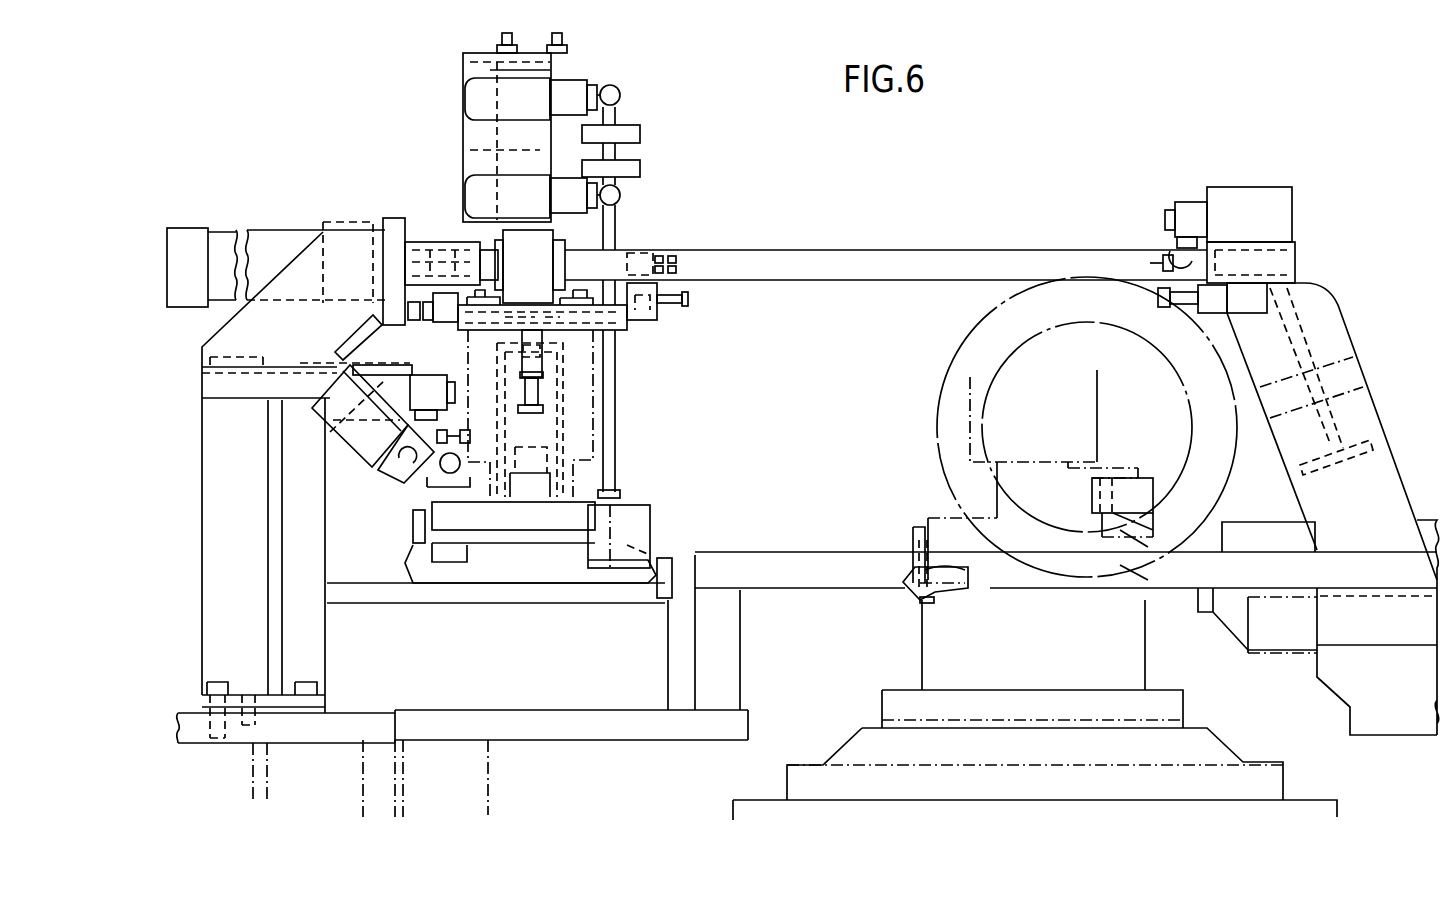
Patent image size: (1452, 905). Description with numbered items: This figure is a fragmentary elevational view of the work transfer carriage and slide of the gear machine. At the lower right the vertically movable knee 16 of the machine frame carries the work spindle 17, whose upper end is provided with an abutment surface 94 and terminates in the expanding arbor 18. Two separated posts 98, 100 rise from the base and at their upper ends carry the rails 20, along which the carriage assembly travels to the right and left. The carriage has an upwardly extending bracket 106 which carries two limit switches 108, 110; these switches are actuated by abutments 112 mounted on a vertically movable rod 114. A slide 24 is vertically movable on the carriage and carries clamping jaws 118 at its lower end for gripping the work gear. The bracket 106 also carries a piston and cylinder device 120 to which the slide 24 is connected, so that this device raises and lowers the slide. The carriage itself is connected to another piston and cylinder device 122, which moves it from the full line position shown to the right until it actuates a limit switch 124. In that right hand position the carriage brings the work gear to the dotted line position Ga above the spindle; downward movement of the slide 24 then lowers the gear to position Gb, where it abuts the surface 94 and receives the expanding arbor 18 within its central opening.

The vertically movable knee 16 is at (1297, 800).
The work spindle 17 is at (842, 750).
The expanding arbor 18 is at (915, 566).
The rails 20 is at (896, 250).
The slide 24 is at (470, 347).
The abutment surface 94 is at (920, 600).
The post 98 is at (1358, 332).
The post 100 is at (202, 490).
The upwardly extending bracket 106 is at (463, 150).
The limit switch 108 is at (538, 110).
The limit switch 110 is at (531, 208).
The abutments 112 is at (640, 134).
The vertically movable rod 114 is at (613, 415).
The clamping jaws 118 is at (645, 522).
The piston and cylinder device 120 is at (492, 158).
The piston and cylinder device 122 is at (187, 229).
The limit switch 124 is at (1268, 224).
The work gear position Ga is at (1148, 546).
The work gear position Gb is at (1148, 580).